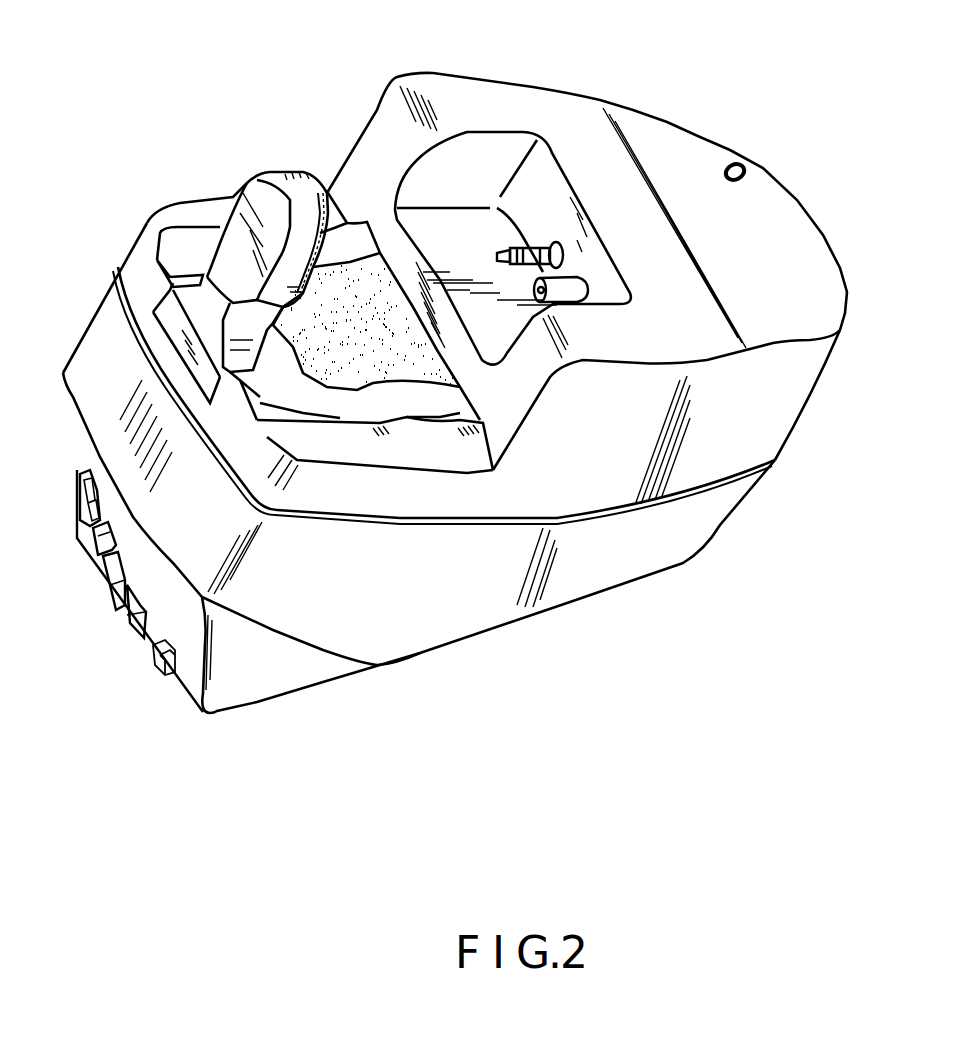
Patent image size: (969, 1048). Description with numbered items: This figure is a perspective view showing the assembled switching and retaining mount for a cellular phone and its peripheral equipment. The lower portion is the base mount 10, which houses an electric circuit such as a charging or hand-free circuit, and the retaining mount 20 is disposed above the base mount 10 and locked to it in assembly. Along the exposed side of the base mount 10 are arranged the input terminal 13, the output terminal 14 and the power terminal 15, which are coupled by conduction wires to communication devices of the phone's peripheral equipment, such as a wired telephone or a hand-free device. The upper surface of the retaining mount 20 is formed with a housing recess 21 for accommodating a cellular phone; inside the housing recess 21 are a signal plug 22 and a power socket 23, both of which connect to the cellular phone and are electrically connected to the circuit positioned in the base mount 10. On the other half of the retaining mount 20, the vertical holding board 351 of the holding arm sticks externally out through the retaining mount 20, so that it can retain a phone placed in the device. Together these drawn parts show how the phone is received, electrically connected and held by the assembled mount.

The base mount 10 is at (333, 673).
The retaining mount 20 is at (517, 497).
The vertical holding board 351 is at (252, 183).
The housing recess 21 is at (503, 200).
The signal plug 22 is at (541, 247).
The power socket 23 is at (585, 287).
The output terminal 14 is at (80, 540).
The input terminal 13 is at (107, 593).
The power terminal 15 is at (133, 637).